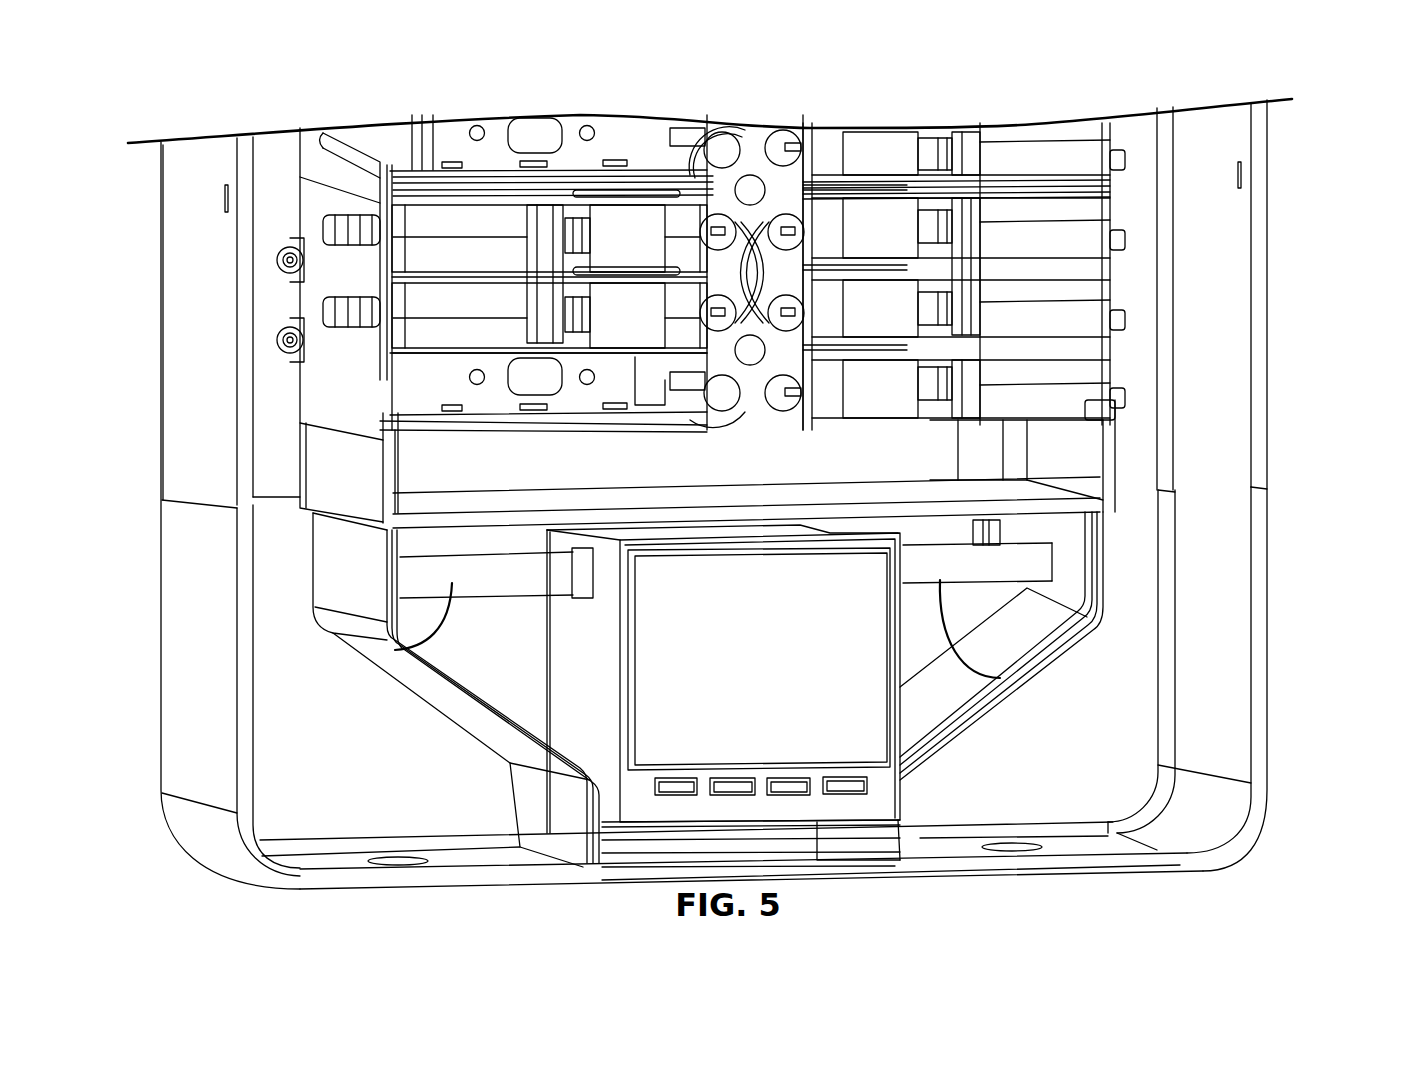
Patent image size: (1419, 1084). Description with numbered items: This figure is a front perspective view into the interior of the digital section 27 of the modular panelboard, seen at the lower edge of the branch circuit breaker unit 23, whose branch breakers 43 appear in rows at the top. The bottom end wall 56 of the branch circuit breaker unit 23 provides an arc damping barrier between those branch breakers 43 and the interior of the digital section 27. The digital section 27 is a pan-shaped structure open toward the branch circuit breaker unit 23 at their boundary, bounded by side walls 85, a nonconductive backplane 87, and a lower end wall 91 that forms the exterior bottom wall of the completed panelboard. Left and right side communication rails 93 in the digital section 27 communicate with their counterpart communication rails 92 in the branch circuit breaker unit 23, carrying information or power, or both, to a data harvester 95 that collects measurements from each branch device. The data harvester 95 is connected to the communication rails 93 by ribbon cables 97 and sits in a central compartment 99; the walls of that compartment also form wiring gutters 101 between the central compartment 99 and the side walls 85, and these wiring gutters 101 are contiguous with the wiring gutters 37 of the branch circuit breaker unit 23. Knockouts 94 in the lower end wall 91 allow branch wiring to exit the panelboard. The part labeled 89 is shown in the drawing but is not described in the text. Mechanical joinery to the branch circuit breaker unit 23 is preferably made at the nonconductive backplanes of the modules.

The branch circuit breaker unit 23 is at (1300, 177).
The digital section 27 is at (1300, 690).
The wiring gutters 37 is at (1139, 128).
The branch breakers 43 is at (465, 251).
The bottom end wall 56 is at (497, 502).
The side walls 85 is at (237, 662).
The nonconductive backplane 87 is at (398, 770).
The right brace 89 is at (1083, 512).
The lower end wall 91 is at (1160, 871).
The communication rails 92 is at (402, 452).
The communication rails 93 is at (402, 543).
The knockouts 94 is at (380, 858).
The data harvester 95 is at (870, 795).
The ribbon cables 97 is at (395, 650).
The central compartment 99 is at (531, 674).
The wiring gutters 101 is at (252, 598).